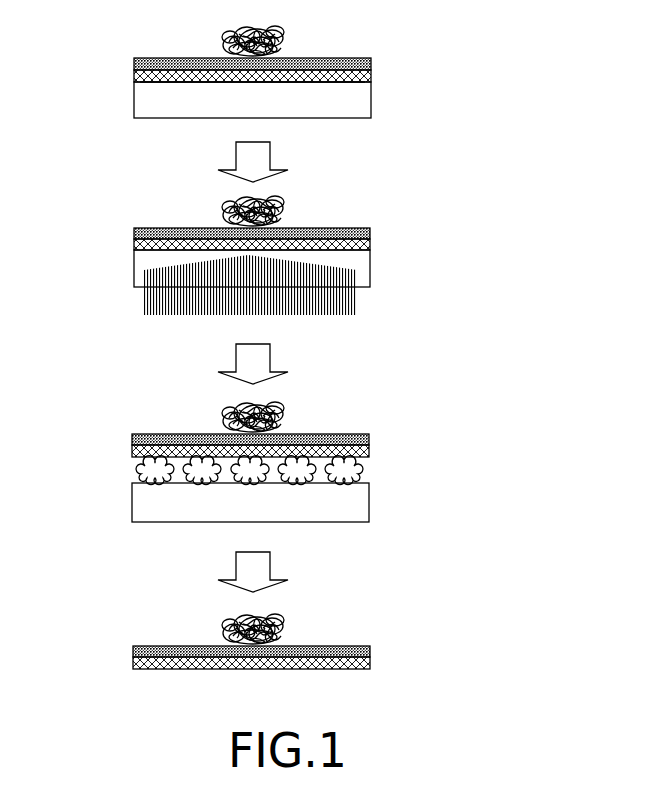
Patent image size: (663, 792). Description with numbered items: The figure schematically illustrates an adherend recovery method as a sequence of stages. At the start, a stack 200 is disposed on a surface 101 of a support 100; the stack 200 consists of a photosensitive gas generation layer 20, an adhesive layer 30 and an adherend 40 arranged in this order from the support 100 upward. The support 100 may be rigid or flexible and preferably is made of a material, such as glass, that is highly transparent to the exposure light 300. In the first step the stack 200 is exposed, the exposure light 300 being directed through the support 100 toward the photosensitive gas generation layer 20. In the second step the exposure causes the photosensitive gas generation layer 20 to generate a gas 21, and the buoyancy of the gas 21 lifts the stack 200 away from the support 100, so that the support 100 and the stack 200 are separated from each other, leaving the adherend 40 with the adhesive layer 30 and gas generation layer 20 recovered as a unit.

The photosensitive gas generation layer 20 is at (287, 382).
The gas 21 is at (148, 470).
The adhesive layer 30 is at (371, 62).
The adherend 40 is at (282, 36).
The support 100 is at (360, 110).
The surface 101 is at (188, 82).
The stack 200 is at (320, 349).
The exposure light 300 is at (218, 295).